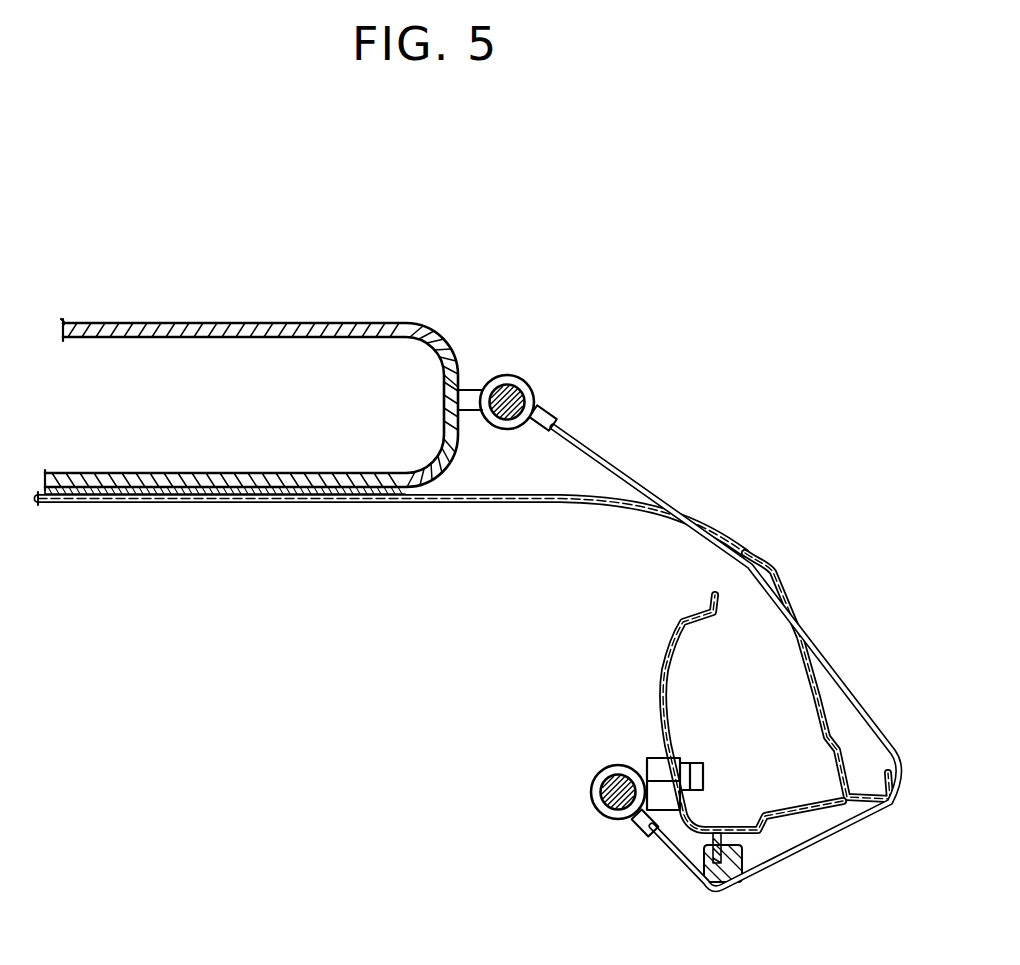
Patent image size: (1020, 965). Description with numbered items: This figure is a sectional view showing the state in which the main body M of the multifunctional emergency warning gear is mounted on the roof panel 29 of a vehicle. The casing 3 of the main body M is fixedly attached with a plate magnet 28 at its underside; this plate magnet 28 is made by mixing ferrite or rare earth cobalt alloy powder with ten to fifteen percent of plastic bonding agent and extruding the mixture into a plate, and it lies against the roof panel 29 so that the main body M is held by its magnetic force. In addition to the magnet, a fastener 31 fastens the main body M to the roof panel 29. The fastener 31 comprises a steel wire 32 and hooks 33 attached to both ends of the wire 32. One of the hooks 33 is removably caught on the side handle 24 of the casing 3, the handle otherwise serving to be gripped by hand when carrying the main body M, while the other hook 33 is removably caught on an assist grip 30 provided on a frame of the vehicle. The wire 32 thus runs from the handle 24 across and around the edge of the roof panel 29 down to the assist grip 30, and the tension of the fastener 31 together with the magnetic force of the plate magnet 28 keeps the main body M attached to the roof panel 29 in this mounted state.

The main body M is at (366, 280).
The casing 3 is at (415, 325).
The side handle 24 is at (519, 377).
The plate magnet 28 is at (238, 502).
The roof panel 29 is at (500, 502).
The assist grip 30 is at (595, 807).
The fastener 31 is at (645, 452).
The steel wire 32 is at (760, 560).
The hooks 33 is at (535, 387).